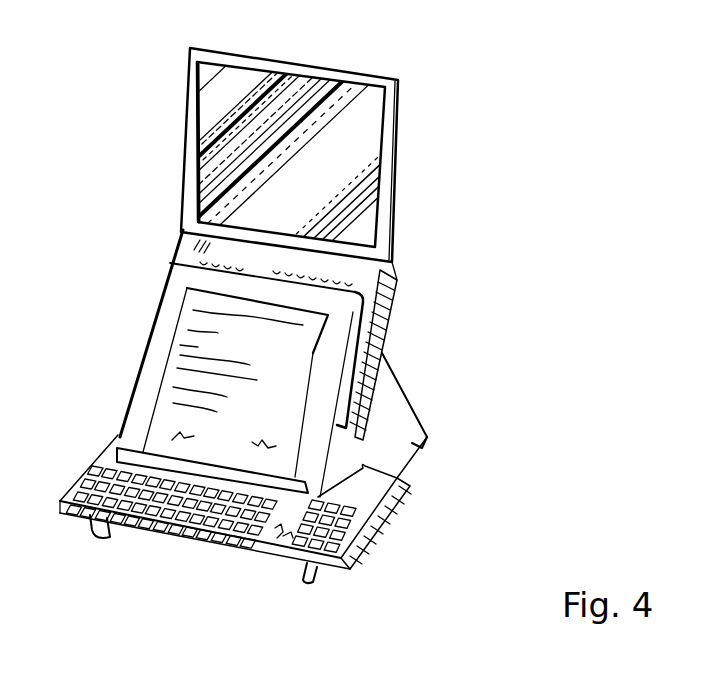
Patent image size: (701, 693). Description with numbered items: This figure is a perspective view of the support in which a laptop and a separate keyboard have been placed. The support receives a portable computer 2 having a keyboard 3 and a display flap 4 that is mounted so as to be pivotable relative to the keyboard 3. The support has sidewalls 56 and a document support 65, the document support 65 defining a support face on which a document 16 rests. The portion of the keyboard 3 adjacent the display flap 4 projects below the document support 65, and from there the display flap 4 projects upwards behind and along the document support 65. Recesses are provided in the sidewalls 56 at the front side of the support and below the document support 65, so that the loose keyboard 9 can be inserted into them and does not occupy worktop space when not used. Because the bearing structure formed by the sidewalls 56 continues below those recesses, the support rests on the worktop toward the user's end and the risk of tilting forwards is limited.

The portable computer 2 is at (422, 150).
The keyboard 3 is at (364, 281).
The display flap 4 is at (351, 68).
The loose keyboard 9 is at (380, 535).
The document 16 is at (190, 322).
The sidewalls 56 is at (97, 540).
The document support 65 is at (138, 413).